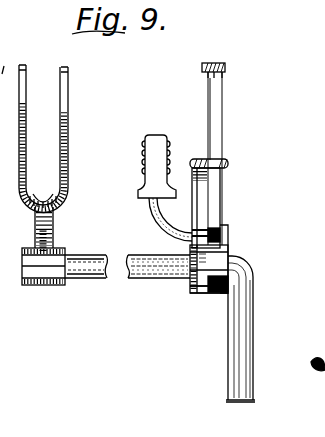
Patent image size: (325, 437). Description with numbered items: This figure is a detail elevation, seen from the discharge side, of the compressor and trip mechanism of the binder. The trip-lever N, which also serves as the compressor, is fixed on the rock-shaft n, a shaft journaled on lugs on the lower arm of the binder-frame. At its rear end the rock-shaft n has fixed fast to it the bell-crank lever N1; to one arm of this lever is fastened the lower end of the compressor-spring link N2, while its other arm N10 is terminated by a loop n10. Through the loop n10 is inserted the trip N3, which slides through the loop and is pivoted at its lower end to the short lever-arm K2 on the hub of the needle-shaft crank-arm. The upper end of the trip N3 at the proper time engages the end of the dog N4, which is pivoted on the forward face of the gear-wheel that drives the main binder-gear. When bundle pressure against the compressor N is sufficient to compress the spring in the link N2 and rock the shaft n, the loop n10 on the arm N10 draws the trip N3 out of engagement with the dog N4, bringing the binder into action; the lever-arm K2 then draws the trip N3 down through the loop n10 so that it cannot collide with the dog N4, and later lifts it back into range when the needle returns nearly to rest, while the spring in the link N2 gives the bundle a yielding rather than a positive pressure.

The trip-lever N is at (43, 138).
The bell-crank lever N1 is at (196, 290).
The compressor-spring link N2 is at (143, 188).
The trip N3 is at (219, 128).
The dog N4 is at (202, 70).
The arm N10 is at (197, 213).
The rock-shaft n is at (162, 268).
The loop n10 is at (228, 164).
The lever-arm K2 is at (229, 244).